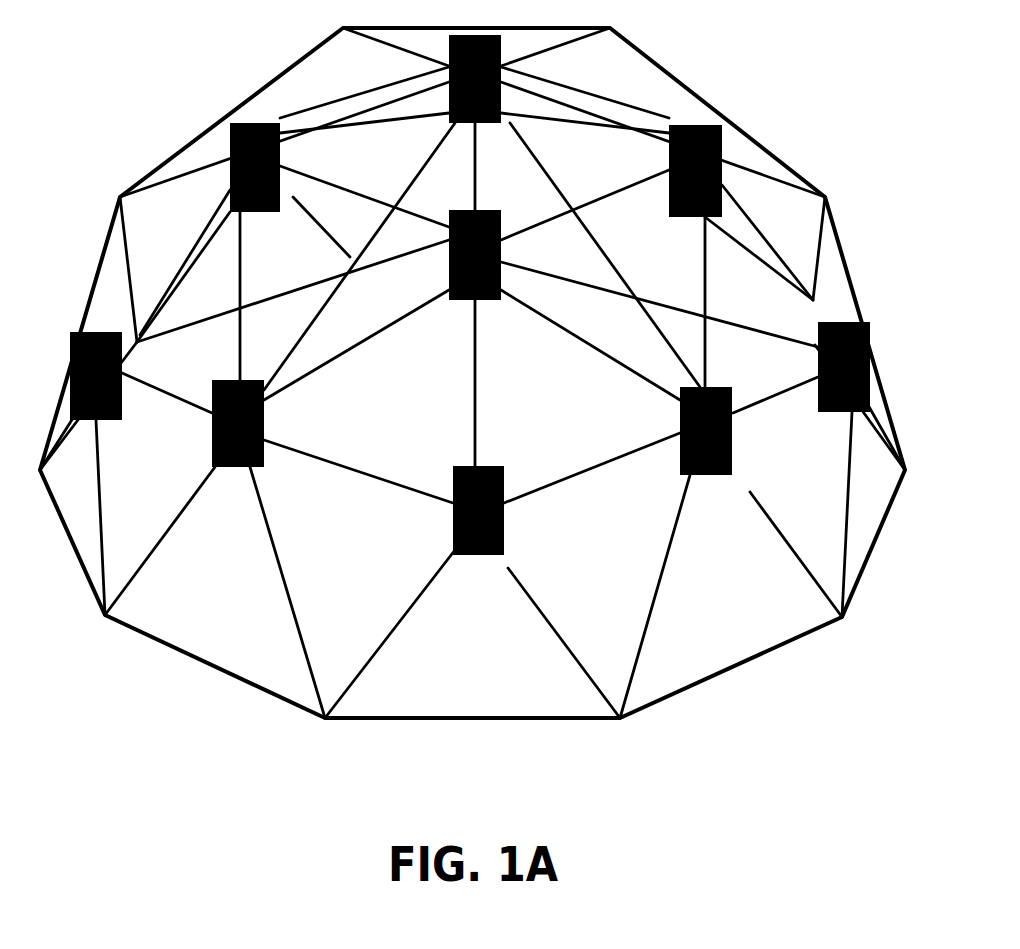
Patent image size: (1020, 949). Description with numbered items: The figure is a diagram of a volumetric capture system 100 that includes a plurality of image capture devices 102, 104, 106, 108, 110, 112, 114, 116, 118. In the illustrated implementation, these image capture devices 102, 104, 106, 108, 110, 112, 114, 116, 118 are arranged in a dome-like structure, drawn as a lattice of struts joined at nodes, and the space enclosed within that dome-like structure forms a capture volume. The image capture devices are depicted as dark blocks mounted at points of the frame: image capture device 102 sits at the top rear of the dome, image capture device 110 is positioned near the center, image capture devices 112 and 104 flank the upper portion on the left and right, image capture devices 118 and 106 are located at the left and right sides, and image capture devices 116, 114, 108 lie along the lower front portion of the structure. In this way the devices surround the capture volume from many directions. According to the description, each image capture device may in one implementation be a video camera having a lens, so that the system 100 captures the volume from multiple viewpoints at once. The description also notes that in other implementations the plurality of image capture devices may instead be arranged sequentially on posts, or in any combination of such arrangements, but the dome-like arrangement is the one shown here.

The volumetric capture system 100 is at (853, 93).
The image capture device 102 is at (538, 136).
The image capture device 104 is at (760, 228).
The image capture device 106 is at (820, 337).
The image capture device 108 is at (773, 491).
The image capture device 110 is at (535, 314).
The image capture device 112 is at (315, 225).
The image capture device 114 is at (541, 558).
The image capture device 116 is at (308, 481).
The image capture device 118 is at (144, 433).